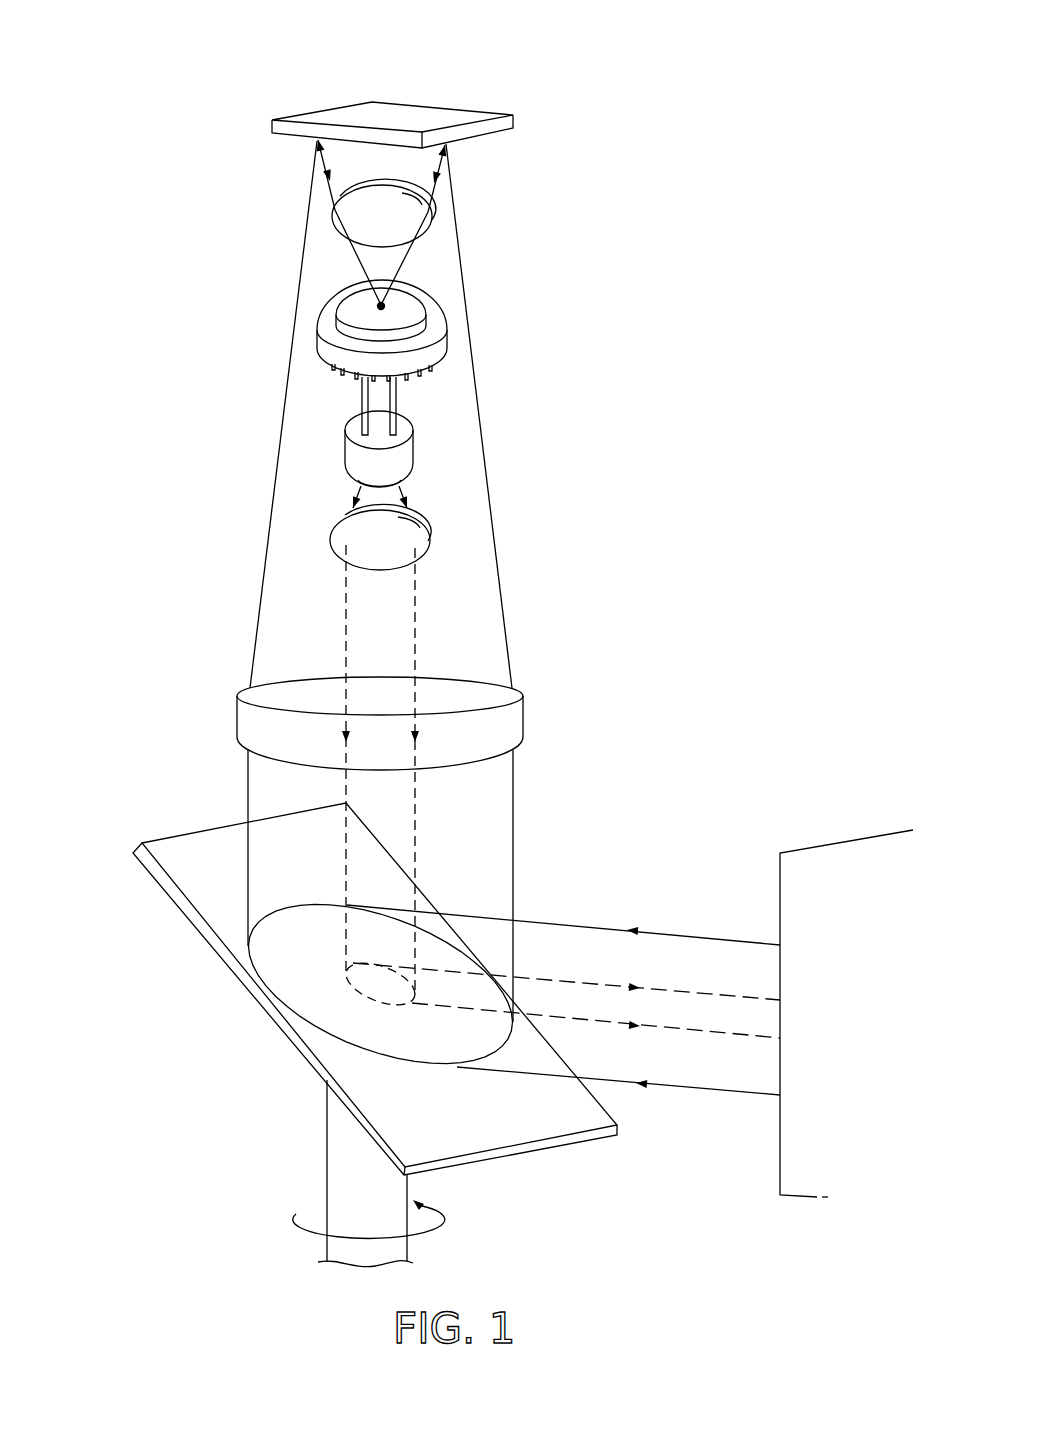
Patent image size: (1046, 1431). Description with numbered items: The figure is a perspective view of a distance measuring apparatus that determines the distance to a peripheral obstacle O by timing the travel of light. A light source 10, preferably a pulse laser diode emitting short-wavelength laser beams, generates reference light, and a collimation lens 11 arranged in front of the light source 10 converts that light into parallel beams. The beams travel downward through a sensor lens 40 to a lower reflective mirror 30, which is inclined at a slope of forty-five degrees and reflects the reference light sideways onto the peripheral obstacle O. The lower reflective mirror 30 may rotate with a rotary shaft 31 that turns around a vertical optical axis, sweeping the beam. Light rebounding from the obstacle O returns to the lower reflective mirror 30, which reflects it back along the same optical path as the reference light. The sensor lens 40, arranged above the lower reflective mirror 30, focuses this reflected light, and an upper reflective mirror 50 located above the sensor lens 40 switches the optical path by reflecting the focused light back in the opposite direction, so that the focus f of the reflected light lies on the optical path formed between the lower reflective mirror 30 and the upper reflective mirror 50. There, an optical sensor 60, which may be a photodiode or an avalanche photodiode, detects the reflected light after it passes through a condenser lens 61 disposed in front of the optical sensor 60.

The light source 10 is at (405, 457).
The collimation lens 11 is at (423, 540).
The lower reflective mirror 30 is at (190, 913).
The rotary shaft 31 is at (348, 1157).
The sensor lens 40 is at (243, 720).
The upper reflective mirror 50 is at (388, 115).
The optical sensor 60 is at (435, 318).
The condenser lens 61 is at (422, 217).
The focus of the reflected light f is at (379, 303).
The peripheral obstacle O is at (808, 1180).